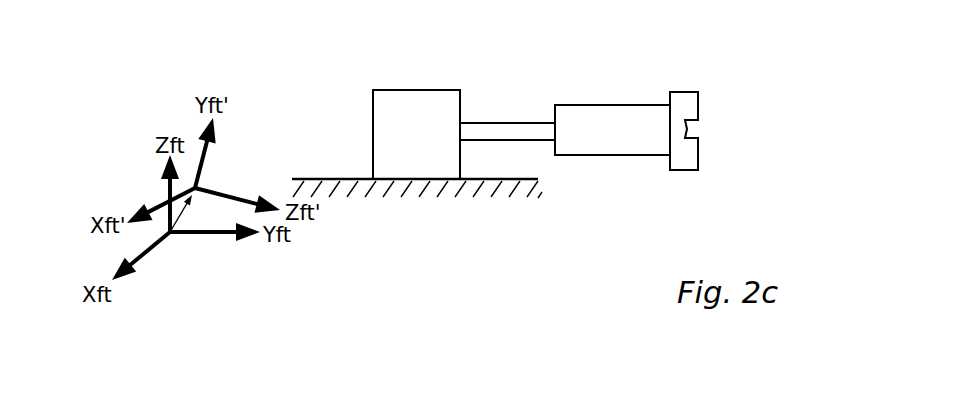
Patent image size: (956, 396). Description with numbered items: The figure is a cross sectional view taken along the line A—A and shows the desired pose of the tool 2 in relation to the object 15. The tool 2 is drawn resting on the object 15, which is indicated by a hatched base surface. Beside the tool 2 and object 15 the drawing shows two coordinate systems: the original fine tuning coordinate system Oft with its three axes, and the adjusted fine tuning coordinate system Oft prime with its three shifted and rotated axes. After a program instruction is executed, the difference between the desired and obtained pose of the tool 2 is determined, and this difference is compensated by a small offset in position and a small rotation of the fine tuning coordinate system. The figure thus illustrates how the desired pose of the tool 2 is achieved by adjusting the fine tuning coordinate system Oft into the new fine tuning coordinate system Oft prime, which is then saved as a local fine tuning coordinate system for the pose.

The tool 2 is at (438, 102).
The object 15 is at (522, 195).
The line A— A is at (407, 222).